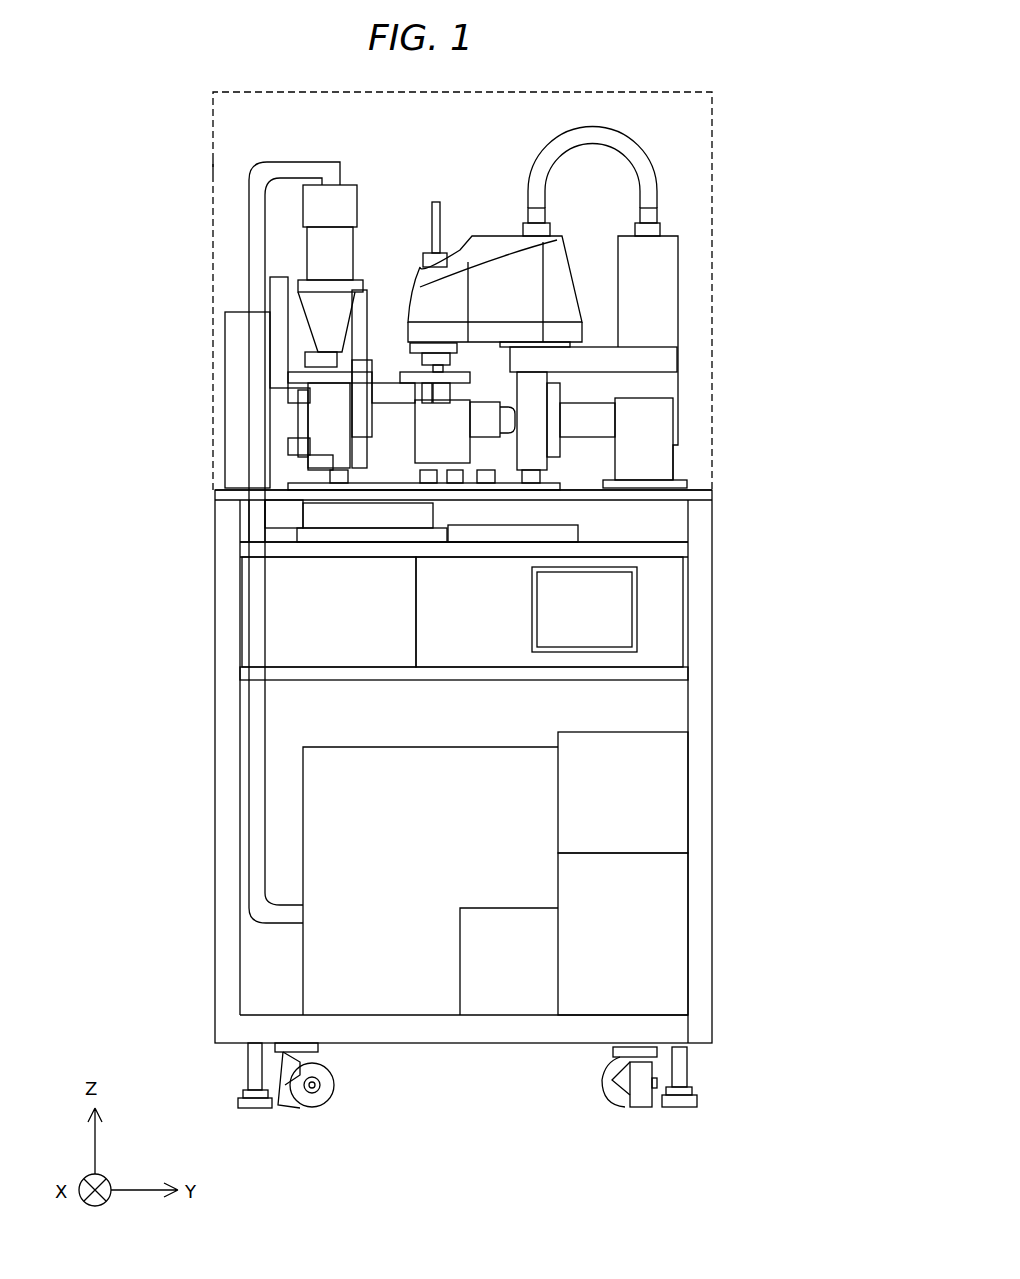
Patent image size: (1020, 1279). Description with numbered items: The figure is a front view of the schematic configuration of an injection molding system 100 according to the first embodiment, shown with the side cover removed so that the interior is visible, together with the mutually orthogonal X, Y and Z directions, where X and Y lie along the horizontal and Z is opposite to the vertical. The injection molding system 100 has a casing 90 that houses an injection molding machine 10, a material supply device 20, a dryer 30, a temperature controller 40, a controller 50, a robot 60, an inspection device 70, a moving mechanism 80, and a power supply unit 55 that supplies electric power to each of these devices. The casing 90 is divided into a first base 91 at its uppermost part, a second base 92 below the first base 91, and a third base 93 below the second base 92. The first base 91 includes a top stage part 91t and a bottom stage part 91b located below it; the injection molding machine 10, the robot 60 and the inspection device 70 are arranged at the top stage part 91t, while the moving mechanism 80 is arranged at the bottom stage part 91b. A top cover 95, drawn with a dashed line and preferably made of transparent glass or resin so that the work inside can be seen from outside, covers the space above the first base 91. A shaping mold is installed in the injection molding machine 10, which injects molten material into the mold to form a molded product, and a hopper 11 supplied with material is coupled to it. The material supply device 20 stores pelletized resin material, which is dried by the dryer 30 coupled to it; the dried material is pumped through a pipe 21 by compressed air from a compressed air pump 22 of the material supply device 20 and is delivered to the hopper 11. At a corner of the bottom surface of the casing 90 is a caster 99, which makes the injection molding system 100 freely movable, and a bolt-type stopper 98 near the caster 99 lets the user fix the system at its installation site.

The injection molding system 100 is at (737, 128).
The top cover 95 is at (213, 165).
The hopper 11 is at (358, 245).
The pipe 21 is at (250, 245).
The injection molding machine 10 is at (395, 323).
The robot 60 is at (695, 293).
The inspection device 70 is at (213, 390).
The first base 91 is at (140, 445).
The top stage part 91t is at (255, 488).
The bottom stage part 91b is at (277, 540).
The moving mechanism 80 is at (590, 532).
The casing 90 is at (715, 542).
The power supply unit 55 is at (300, 625).
The controller 50 is at (660, 630).
The second base 92 is at (258, 667).
The material supply device 20 is at (415, 782).
The compressed air pump 22 is at (650, 780).
The temperature controller 40 is at (650, 946).
The dryer 30 is at (543, 973).
The third base 93 is at (275, 1013).
The stopper 98 is at (248, 1075).
The caster 99 is at (335, 1085).